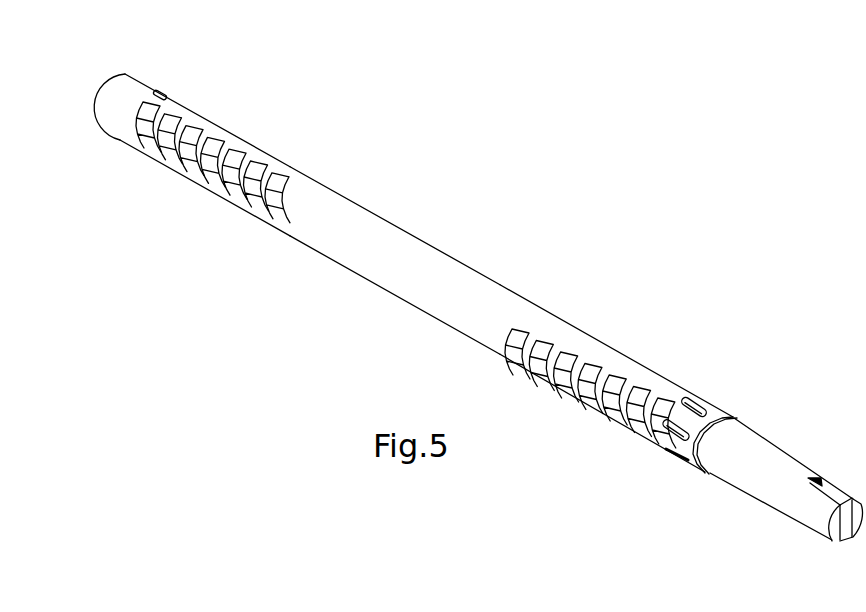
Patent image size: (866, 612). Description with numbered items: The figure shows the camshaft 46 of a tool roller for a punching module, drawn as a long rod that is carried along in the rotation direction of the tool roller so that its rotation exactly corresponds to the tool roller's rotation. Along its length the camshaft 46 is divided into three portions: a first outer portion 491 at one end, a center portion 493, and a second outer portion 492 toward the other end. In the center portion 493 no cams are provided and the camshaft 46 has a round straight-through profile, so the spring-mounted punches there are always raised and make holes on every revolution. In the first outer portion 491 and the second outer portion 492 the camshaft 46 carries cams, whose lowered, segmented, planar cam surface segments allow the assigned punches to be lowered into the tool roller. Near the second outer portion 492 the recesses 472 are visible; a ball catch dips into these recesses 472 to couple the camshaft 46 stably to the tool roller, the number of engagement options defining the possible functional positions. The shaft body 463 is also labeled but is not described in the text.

The camshaft 46 is at (763, 457).
The elongate shaft 463 is at (363, 276).
The recesses 472 is at (697, 400).
The first outer portion 491 is at (240, 125).
The second outer portion 492 is at (620, 327).
The center portion 493 is at (438, 237).